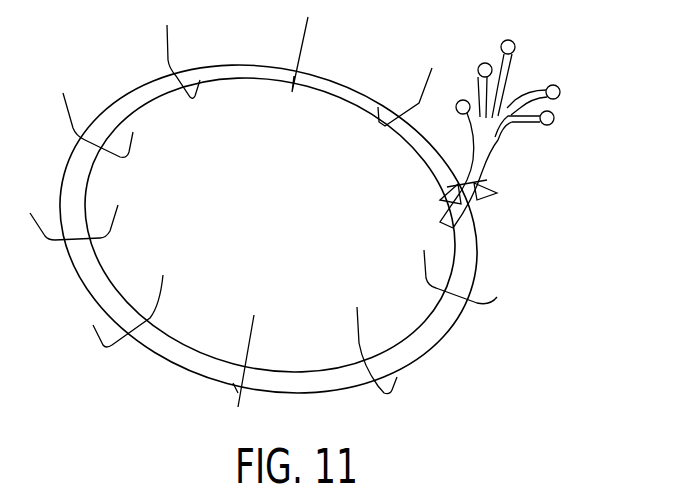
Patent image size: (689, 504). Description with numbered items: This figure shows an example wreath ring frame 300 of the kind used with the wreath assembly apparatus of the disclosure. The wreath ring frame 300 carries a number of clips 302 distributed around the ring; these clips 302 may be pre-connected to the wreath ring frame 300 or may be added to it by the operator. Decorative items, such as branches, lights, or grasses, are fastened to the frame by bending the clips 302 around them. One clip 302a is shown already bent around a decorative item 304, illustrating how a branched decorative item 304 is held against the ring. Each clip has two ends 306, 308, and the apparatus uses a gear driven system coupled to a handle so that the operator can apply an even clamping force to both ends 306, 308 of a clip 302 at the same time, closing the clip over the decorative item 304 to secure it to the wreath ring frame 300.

The wreath ring frame 300 is at (348, 82).
The clips 302 is at (492, 302).
The clip 302a is at (483, 190).
The decorative item 304 is at (530, 85).
The end of clip 306 is at (497, 297).
The end of clip 308 is at (424, 264).